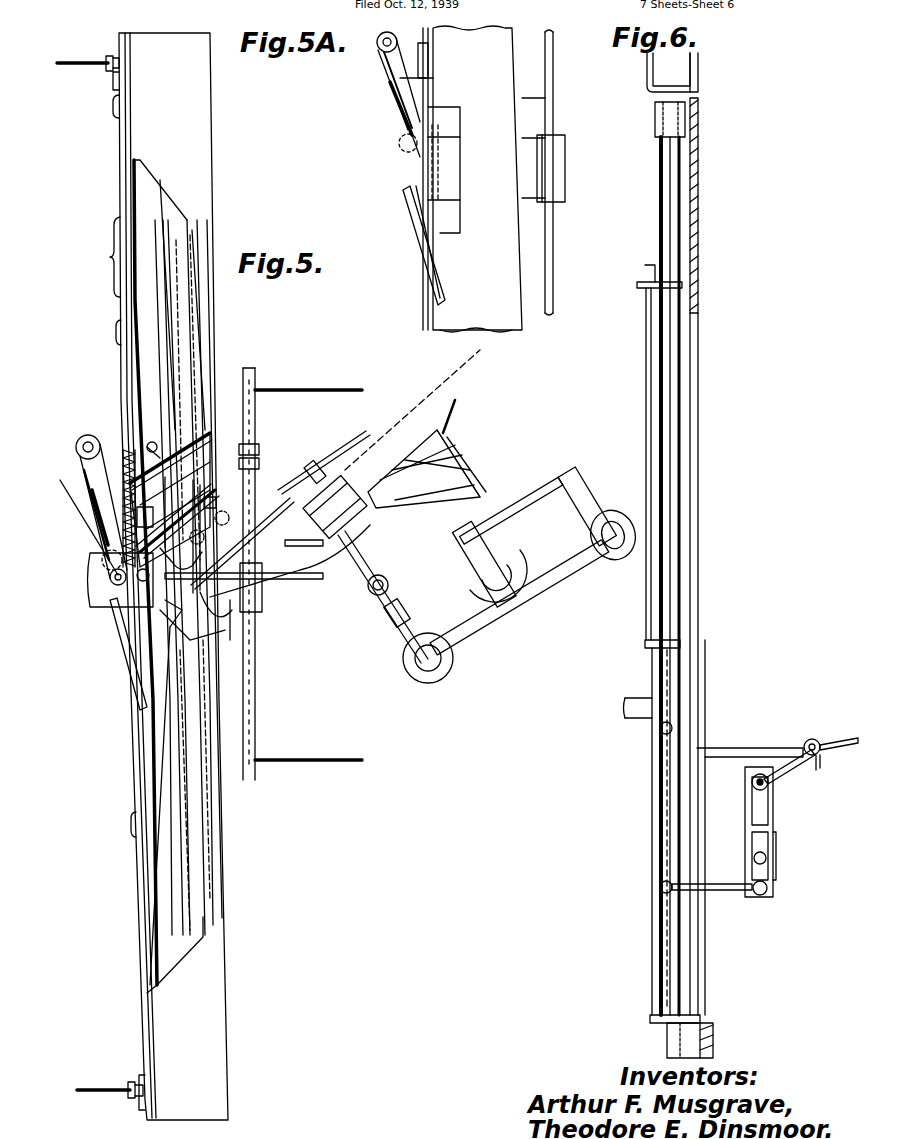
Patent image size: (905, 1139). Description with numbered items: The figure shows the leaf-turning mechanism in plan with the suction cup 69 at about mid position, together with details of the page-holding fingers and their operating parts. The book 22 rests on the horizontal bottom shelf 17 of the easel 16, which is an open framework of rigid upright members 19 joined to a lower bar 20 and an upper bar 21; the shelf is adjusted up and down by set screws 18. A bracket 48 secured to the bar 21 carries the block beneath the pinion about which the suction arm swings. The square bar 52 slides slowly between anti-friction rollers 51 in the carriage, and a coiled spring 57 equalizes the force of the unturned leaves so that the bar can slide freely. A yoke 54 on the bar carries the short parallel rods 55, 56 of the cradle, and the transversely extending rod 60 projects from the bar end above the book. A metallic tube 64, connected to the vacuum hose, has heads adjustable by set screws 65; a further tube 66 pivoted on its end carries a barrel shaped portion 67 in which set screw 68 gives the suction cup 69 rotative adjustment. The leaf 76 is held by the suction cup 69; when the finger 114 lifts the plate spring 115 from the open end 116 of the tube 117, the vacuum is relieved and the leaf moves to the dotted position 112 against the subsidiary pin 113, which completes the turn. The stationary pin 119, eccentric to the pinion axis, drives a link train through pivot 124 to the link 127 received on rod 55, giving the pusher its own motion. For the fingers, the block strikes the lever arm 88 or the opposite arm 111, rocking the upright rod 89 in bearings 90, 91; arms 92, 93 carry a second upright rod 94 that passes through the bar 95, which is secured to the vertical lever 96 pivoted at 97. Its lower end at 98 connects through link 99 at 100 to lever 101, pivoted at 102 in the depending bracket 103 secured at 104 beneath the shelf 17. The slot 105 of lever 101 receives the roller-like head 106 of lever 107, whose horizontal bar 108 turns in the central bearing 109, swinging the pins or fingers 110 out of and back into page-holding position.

In FIG. 5, the book easel 16 is at (110, 257).
In FIG. 5, the horizontal bottom shelf 17 is at (205, 135).
In FIG. 5A, the horizontal bottom shelf 17 is at (510, 265).
In FIG. 6, the horizontal bottom shelf 17 is at (755, 748).
In FIG. 5, the set screws 18 is at (70, 63).
In FIG. 5, the rigid upright members 19 is at (113, 80).
In FIG. 6, the transversely extending bar 20 is at (705, 1025).
In FIG. 5, the transversely extending bar 21 is at (132, 127).
In FIG. 5A, the transversely extending bar 21 is at (425, 179).
In FIG. 6, the transversely extending bar 21 is at (698, 208).
In FIG. 5, the book 22 is at (150, 328).
In FIG. 5, the bracket 48 is at (172, 620).
In FIG. 5A, the bracket 48 is at (452, 147).
In FIG. 5, the anti-friction rollers 51 is at (212, 526).
In FIG. 5, the bar 52 is at (212, 440).
In FIG. 5, the yoke 54 is at (152, 442).
In FIG. 5, the rod 55 is at (262, 500).
In FIG. 5, the rod 56 is at (148, 518).
In FIG. 5, the coiled spring 57 is at (86, 515).
In FIG. 5, the transversely extending rod 60 is at (228, 640).
In FIG. 5, the metallic tube 64 is at (506, 561).
In FIG. 5, the set screws 65 is at (453, 660).
In FIG. 5, the tube 66 is at (495, 484).
In FIG. 5, the barrel shaped portion 67 is at (460, 574).
In FIG. 5, the set screw 68 is at (507, 592).
In FIG. 5, the suction cup 69 is at (470, 470).
In FIG. 5, the leaf 76 is at (458, 410).
In FIG. 5, the lever arm 88 is at (100, 525).
In FIG. 5A, the lever arm 88 is at (400, 110).
In FIG. 6, the lever arm 88 is at (647, 73).
In FIG. 5, the upright rod 89 is at (108, 552).
In FIG. 5A, the upright rod 89 is at (399, 148).
In FIG. 6, the upright rod 89 is at (665, 193).
In FIG. 6, the upper bearing 90 is at (655, 121).
In FIG. 6, the lower bearing 91 is at (713, 1038).
In FIG. 5, the upper arm 92 is at (90, 490).
In FIG. 5A, the upper arm 92 is at (385, 78).
In FIG. 6, the upper arm 92 is at (638, 286).
In FIG. 6, the lower arm 93 is at (650, 1019).
In FIG. 5, the second upright rod 94 is at (88, 435).
In FIG. 5A, the second upright rod 94 is at (380, 58).
In FIG. 6, the second upright rod 94 is at (646, 390).
In FIG. 6, the bar 95 is at (645, 648).
In FIG. 6, the vertically positioned lever 96 is at (665, 790).
In FIG. 6, the pivot 97 is at (660, 730).
In FIG. 6, the lower end connection 98 is at (660, 890).
In FIG. 5, the link 99 is at (94, 445).
In FIG. 5A, the link 99 is at (423, 85).
In FIG. 6, the link 99 is at (725, 890).
In FIG. 6, the link end 100 is at (768, 888).
In FIG. 6, the lever 101 is at (773, 838).
In FIG. 6, the pivot 102 is at (768, 860).
In FIG. 6, the depending bracket 103 is at (776, 848).
In FIG. 6, the bracket securing point 104 is at (745, 772).
In FIG. 6, the slot 105 is at (770, 812).
In FIG. 6, the roller-like head 106 is at (772, 788).
In FIG. 5A, the lever 107 is at (522, 98).
In FIG. 6, the lever 107 is at (790, 765).
In FIG. 5, the horizontally supported bar 108 is at (256, 668).
In FIG. 5A, the horizontally supported bar 108 is at (554, 112).
In FIG. 6, the horizontally supported bar 108 is at (820, 742).
In FIG. 5, the bearing 109 is at (262, 600).
In FIG. 5A, the bearing 109 is at (566, 156).
In FIG. 6, the bearing 109 is at (810, 738).
In FIG. 5, the pins or fingers 110 is at (292, 392).
In FIG. 6, the pins or fingers 110 is at (822, 753).
In FIG. 5, the lever arm 111 is at (130, 660).
In FIG. 5A, the lever arm 111 is at (420, 235).
In FIG. 6, the lever arm 111 is at (699, 73).
In FIG. 5, the released leaf position 112 is at (455, 378).
In FIG. 5, the subsidiary pin 113 is at (345, 460).
In FIG. 5, the finger 114 is at (295, 580).
In FIG. 5, the plate spring 115 is at (330, 572).
In FIG. 5, the open end 116 is at (360, 530).
In FIG. 5, the tube 117 is at (372, 555).
In FIG. 5, the stationary pin 119 is at (121, 580).
In FIG. 5, the pivot 124 is at (265, 443).
In FIG. 5, the link 127 is at (265, 461).